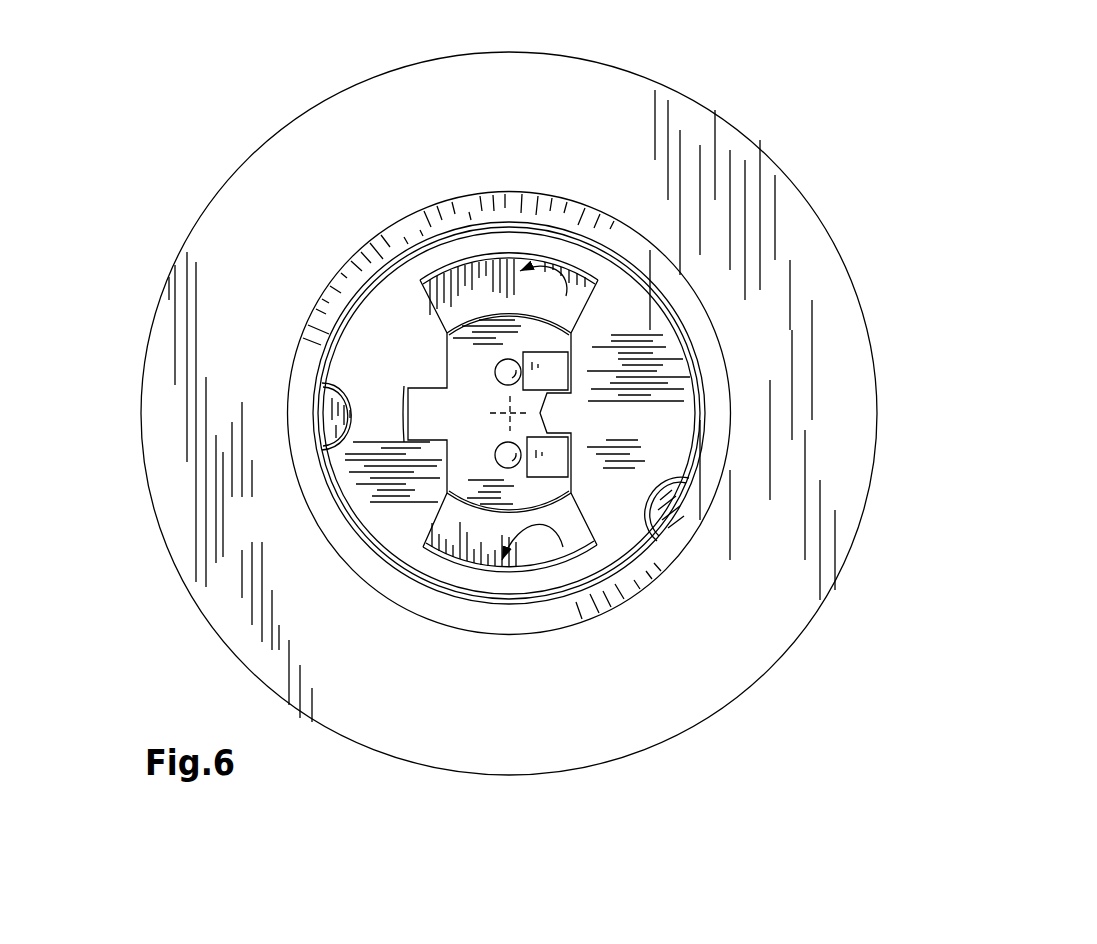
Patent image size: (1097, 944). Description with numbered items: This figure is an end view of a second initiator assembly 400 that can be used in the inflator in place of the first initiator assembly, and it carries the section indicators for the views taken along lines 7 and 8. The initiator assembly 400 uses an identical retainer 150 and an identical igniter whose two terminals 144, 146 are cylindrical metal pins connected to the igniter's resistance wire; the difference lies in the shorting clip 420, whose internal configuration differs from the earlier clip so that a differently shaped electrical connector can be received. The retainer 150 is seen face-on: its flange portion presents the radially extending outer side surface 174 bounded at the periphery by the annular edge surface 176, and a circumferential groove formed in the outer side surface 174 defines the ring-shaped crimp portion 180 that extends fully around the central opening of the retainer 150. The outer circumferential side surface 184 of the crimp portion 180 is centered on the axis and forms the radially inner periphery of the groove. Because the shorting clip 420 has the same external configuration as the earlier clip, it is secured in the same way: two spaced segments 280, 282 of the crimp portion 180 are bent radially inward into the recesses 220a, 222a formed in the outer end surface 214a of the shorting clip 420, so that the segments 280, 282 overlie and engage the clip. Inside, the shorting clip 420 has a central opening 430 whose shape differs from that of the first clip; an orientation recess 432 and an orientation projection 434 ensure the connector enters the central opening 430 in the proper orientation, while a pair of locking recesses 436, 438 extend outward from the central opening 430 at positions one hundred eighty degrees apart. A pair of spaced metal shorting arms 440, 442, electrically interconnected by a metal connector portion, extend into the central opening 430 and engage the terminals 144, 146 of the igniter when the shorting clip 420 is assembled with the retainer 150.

The section line 7- 7 is at (122, 418).
The section line 8- 8 is at (506, 42).
The retainer 150 is at (268, 142).
The outer side surface 174 is at (248, 203).
The annular edge surface 176 is at (158, 298).
The crimp portion 180 is at (315, 358).
The outer circumferential side surface 184 is at (693, 347).
The outer end surface 214a is at (395, 297).
The recess 220a is at (327, 430).
The recess 222a is at (653, 508).
The segment 280 is at (330, 410).
The segment 282 is at (657, 512).
The initiator assembly 400 is at (152, 570).
The shorting clip 420 is at (387, 552).
The central opening 430 is at (477, 343).
The orientation recess 432 is at (423, 410).
The orientation projection 434 is at (552, 411).
The locking recess 436 is at (566, 296).
The locking recess 438 is at (563, 547).
The shorting arm 440 is at (547, 372).
The shorting arm 442 is at (550, 460).
The terminal 144 is at (508, 368).
The terminal 146 is at (507, 457).